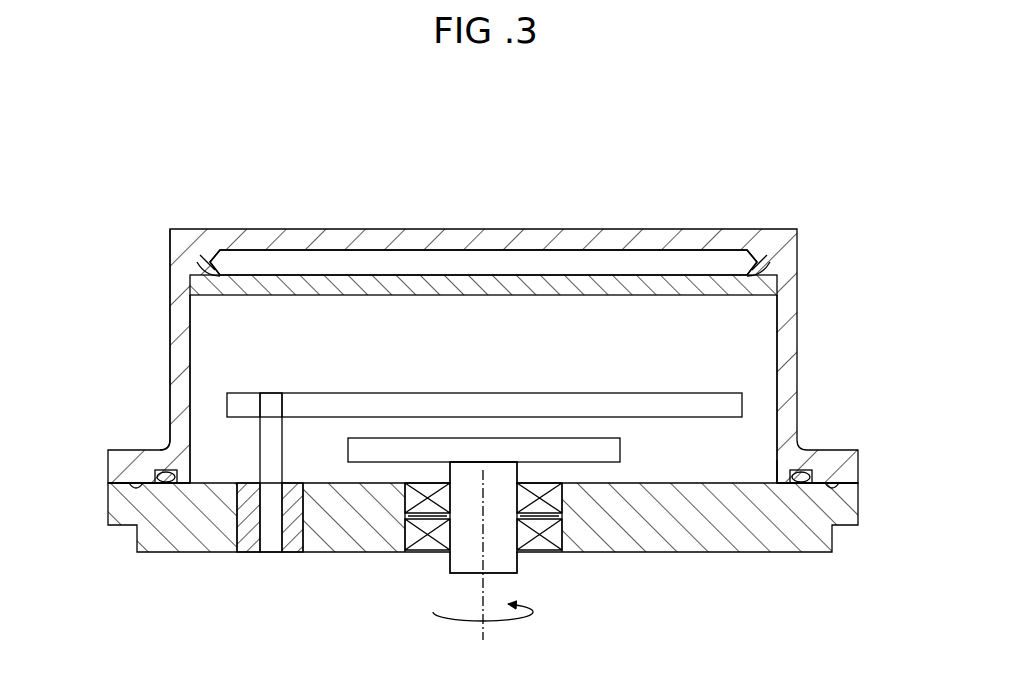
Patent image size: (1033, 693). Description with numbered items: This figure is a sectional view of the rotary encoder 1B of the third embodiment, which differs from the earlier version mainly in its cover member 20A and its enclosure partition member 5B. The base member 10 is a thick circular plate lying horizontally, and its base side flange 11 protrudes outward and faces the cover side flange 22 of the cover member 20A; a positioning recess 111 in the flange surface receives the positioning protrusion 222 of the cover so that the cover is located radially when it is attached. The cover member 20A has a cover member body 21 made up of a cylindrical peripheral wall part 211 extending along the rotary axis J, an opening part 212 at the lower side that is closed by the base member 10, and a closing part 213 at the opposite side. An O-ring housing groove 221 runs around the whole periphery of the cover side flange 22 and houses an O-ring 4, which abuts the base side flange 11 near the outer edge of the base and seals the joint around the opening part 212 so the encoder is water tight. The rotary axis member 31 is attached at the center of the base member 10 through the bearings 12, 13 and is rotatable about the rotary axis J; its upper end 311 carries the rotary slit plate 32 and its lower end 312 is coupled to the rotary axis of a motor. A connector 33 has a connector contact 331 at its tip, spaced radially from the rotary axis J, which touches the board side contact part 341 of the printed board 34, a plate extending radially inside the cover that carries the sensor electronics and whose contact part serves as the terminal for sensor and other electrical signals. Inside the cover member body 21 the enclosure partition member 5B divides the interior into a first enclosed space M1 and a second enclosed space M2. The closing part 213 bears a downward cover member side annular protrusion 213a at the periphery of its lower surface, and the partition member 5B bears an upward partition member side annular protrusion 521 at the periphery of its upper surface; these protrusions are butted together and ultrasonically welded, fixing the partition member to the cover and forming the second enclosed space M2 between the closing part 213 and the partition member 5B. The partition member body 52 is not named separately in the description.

The rotary encoder 1B is at (822, 165).
The cover member 20A is at (104, 375).
The cover member body 21 is at (178, 373).
The cover side flange 22 is at (140, 448).
The cylindrical peripheral wall part 211 is at (180, 370).
The opening part 212 is at (772, 485).
The closing part 213 is at (506, 233).
The cover member side annular protrusion 213a is at (232, 262).
The O-ring housing groove 221 is at (160, 485).
The positioning protrusion 222 is at (140, 487).
The O-ring 4 is at (163, 482).
The enclosure partition member 5B is at (330, 262).
The first enclosed space M1 is at (652, 325).
The second enclosed space M2 is at (606, 255).
The partition plate 52 is at (740, 297).
The partition member side annular protrusion 521 is at (205, 270).
The base member 10 is at (806, 562).
The base side flange 11 is at (117, 508).
The positioning recess 111 is at (135, 485).
The bearing 12 is at (405, 500).
The bearing 13 is at (405, 530).
The rotary axis member 31 is at (452, 560).
The upper end 311 is at (497, 462).
The lower end 312 is at (462, 575).
The rotary slit plate 32 is at (630, 464).
The connector 33 is at (243, 553).
The connector contact 331 is at (282, 405).
The printed board 34 is at (690, 418).
The board side contact part 341 is at (278, 412).
The rotary axis J is at (485, 628).